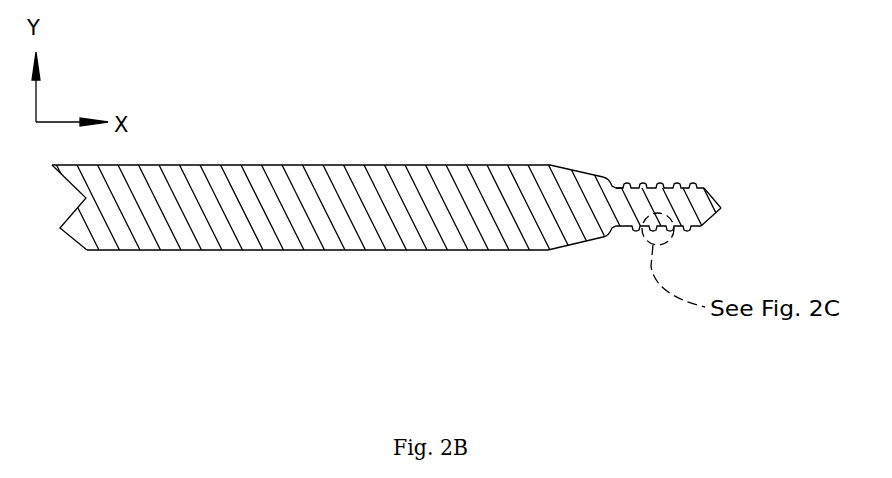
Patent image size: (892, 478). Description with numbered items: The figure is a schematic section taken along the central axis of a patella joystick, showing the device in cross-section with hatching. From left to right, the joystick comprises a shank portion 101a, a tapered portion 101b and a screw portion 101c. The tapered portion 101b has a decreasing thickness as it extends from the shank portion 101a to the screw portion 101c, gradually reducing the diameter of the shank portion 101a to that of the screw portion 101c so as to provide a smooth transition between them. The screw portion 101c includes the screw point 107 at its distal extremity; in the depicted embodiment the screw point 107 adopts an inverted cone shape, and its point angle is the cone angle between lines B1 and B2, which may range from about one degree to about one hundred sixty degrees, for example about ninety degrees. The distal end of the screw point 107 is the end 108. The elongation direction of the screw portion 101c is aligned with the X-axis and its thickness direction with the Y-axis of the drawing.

The shank portion 101a is at (320, 118).
The tapered portion 101b is at (565, 283).
The screw portion 101c is at (625, 157).
The screw point 107 is at (706, 193).
The end 108 is at (707, 226).
The line B1 is at (722, 204).
The line B2 is at (702, 185).